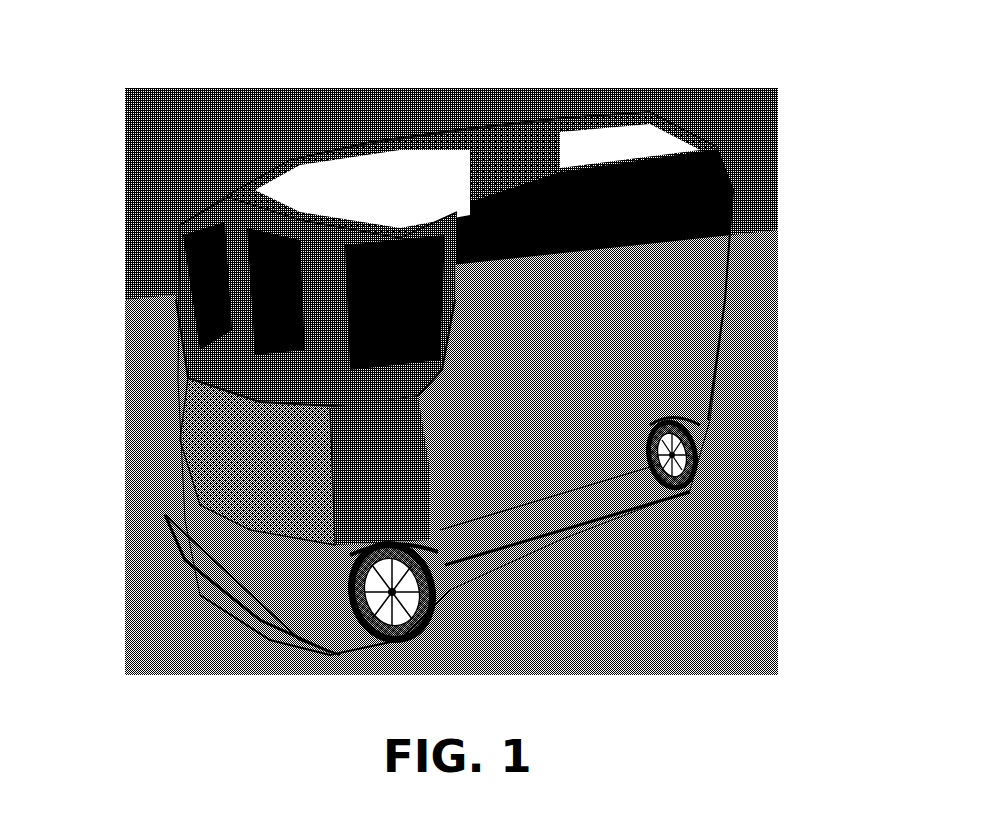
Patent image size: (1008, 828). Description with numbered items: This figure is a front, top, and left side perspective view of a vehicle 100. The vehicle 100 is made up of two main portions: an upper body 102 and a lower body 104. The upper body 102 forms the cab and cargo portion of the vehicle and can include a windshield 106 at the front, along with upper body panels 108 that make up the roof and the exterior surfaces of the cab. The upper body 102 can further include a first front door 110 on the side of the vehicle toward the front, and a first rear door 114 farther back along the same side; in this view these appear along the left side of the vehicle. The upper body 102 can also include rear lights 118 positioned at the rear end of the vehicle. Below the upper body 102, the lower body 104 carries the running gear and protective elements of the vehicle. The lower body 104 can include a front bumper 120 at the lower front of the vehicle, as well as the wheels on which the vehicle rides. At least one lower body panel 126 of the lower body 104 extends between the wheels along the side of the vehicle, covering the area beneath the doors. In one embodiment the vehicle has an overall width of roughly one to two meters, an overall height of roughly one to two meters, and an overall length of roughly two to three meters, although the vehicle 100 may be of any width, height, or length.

The vehicle 100 is at (270, 78).
The upper body 102 is at (412, 148).
The lower body 104 is at (722, 430).
The windshield 106 is at (180, 262).
The upper body panels 108 is at (200, 410).
The first front door 110 is at (400, 485).
The first rear door 114 is at (705, 185).
The rear lights 118 is at (730, 198).
The front bumper 120 is at (185, 557).
The lower body panel 126 is at (520, 535).